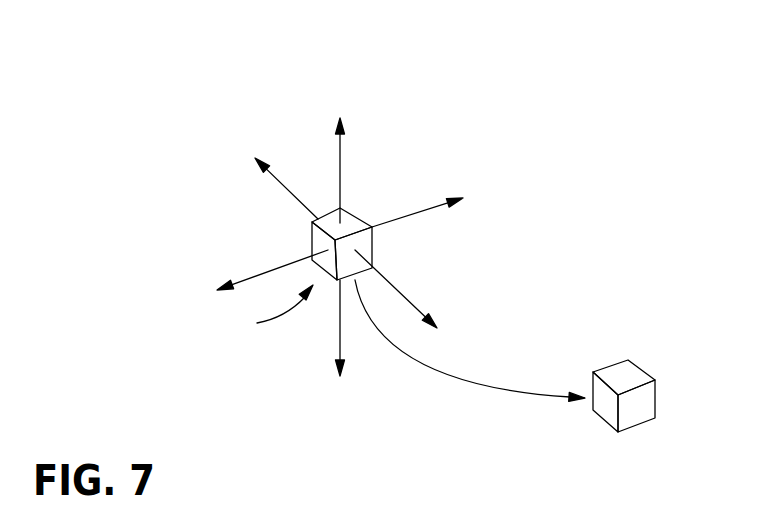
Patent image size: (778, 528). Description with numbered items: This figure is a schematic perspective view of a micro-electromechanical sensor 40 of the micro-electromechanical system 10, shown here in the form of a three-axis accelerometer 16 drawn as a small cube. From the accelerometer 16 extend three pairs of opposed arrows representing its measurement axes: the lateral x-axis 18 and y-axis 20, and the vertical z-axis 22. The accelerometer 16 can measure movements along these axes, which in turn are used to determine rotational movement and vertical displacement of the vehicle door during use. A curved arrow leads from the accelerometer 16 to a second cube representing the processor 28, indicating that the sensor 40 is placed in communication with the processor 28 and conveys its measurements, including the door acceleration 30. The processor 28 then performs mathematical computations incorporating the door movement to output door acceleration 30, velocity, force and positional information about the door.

The micro-electromechanical system 10 is at (273, 122).
The accelerometer 16 is at (318, 240).
The x-axis 18 is at (408, 295).
The y-axis 20 is at (420, 215).
The z-axis 22 is at (342, 177).
The processor 28 is at (622, 378).
The door acceleration 30 is at (438, 378).
The micro-electromechanical sensor 40 is at (271, 315).